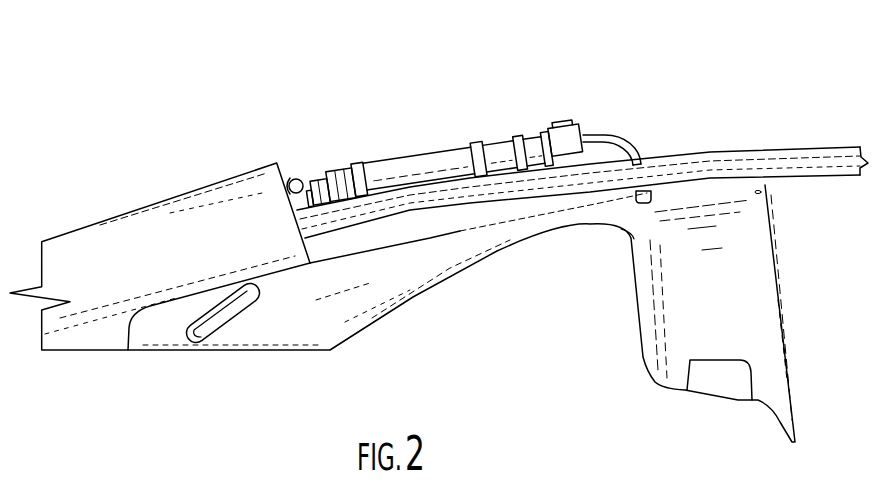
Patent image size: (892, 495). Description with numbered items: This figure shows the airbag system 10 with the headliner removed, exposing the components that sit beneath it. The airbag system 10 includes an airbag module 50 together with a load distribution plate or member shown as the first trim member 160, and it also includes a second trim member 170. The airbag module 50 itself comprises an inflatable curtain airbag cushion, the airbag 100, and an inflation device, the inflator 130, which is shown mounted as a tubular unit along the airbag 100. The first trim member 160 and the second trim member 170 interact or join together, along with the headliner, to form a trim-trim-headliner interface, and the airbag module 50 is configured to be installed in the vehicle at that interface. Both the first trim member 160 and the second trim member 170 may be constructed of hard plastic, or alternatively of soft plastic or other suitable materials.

The airbag system 10 is at (432, 78).
The airbag module 50 is at (612, 120).
The airbag 100 is at (709, 167).
The inflator 130 is at (440, 160).
The first trim member 160 is at (163, 214).
The second trim member 170 is at (643, 274).